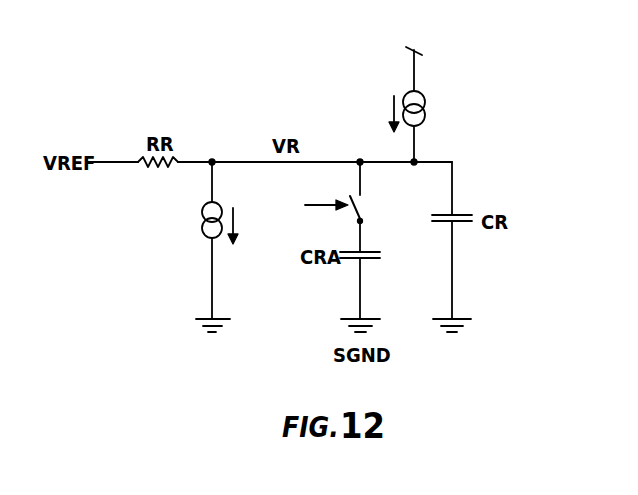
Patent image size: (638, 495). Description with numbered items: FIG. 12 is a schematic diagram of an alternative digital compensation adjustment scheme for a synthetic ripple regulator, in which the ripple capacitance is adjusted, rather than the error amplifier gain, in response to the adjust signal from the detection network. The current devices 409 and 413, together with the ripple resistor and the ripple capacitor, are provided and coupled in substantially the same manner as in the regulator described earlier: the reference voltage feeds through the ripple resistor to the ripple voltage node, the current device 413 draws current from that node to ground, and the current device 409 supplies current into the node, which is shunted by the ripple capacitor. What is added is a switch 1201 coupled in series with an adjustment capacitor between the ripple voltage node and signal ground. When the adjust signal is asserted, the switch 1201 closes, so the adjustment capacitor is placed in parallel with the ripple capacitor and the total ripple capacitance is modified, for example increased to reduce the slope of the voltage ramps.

The current device 409 is at (405, 95).
The current device 413 is at (215, 238).
The switch 1201 is at (363, 218).